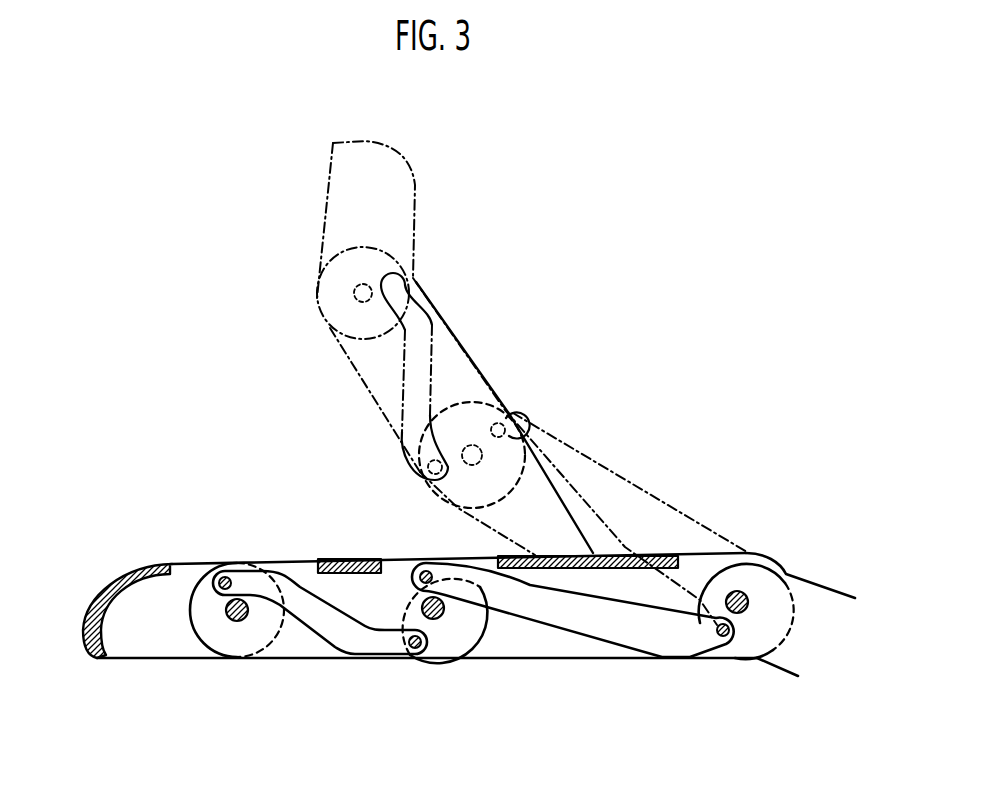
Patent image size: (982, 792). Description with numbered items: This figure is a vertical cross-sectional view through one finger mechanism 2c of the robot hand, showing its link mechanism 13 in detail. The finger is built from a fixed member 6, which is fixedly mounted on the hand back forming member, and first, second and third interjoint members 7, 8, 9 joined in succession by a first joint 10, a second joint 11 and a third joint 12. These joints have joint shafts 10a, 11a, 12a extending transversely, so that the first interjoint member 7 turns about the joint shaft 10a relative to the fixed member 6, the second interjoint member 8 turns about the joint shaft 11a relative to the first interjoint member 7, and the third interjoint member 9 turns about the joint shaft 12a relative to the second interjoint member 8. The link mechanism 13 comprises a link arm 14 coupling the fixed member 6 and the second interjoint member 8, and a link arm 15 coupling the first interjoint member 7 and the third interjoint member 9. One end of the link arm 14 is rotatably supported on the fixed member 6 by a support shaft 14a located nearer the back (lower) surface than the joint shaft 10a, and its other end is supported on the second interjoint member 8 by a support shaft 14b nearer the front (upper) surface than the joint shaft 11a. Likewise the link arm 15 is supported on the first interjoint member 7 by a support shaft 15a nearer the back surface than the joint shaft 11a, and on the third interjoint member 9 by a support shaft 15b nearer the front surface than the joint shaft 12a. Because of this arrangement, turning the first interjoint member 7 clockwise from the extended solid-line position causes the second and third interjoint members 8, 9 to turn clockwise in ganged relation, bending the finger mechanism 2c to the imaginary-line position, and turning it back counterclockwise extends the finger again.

The finger mechanism 2c is at (88, 667).
The fixed member 6 is at (822, 602).
The first interjoint member 7 is at (633, 485).
The second interjoint member 8 is at (463, 345).
The third interjoint member 9 is at (148, 638).
The first joint 10 is at (764, 535).
The joint shaft 10a is at (745, 612).
The second joint 11 is at (437, 670).
The joint shaft 11a is at (440, 615).
The third joint 12 is at (237, 665).
The joint shaft 12a is at (245, 618).
The link mechanism 13 is at (473, 512).
The link arm 14 is at (612, 625).
The support shaft 14a is at (723, 637).
The support shaft 14b is at (424, 570).
The link arm 15 is at (302, 575).
The support shaft 15a is at (410, 650).
The support shaft 15b is at (213, 570).